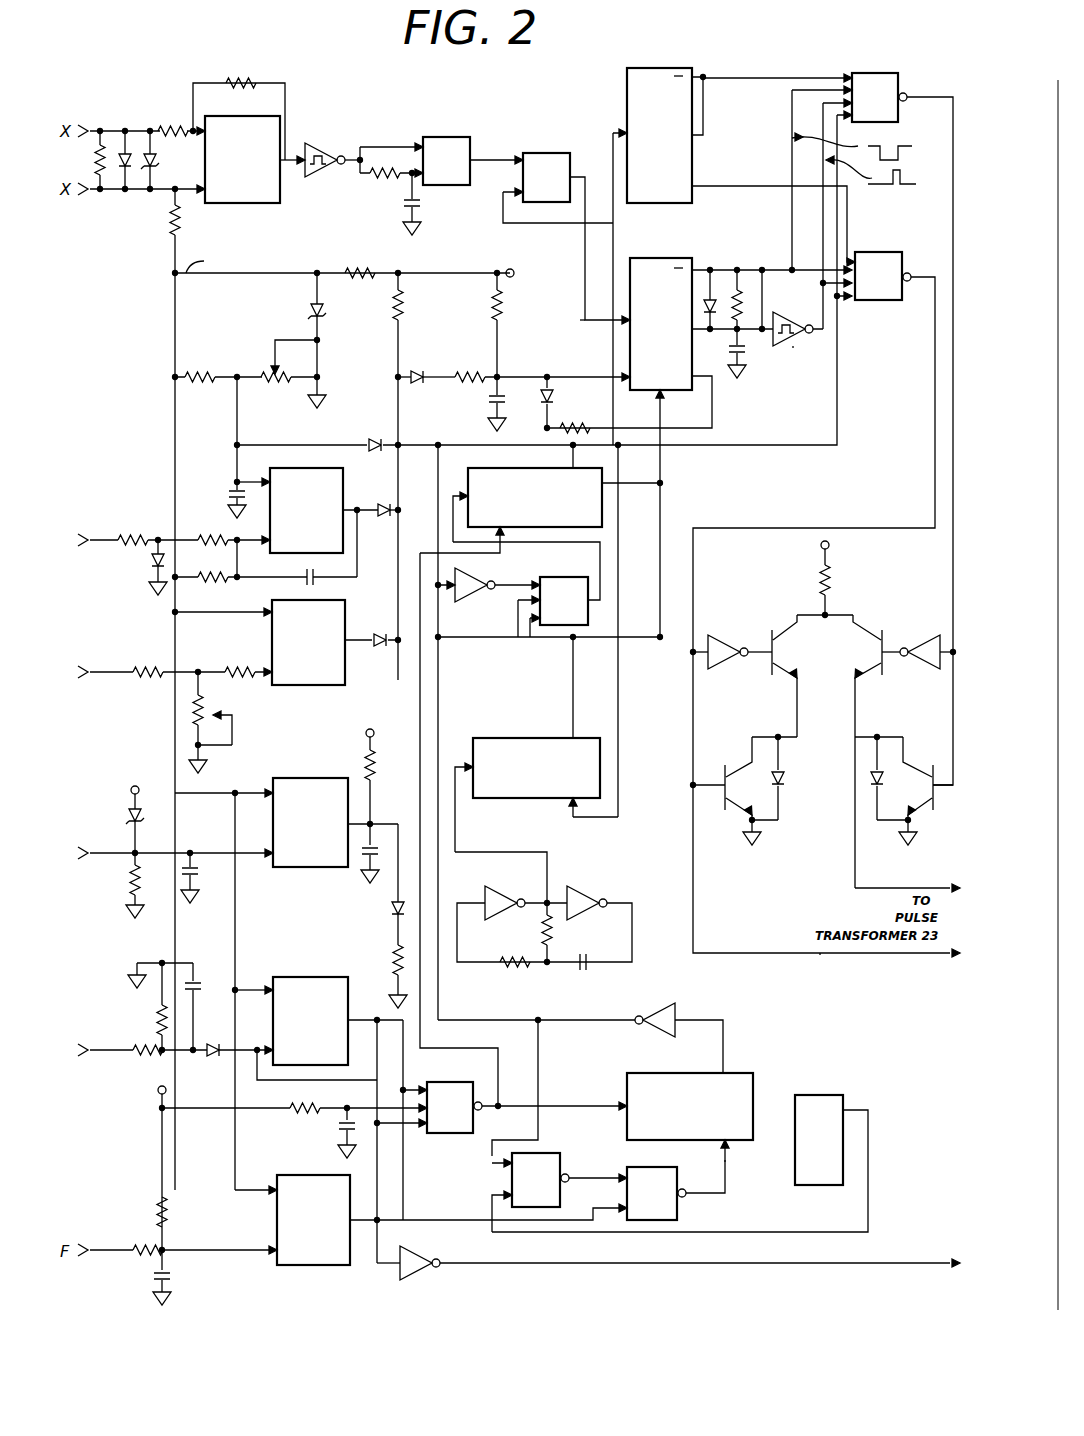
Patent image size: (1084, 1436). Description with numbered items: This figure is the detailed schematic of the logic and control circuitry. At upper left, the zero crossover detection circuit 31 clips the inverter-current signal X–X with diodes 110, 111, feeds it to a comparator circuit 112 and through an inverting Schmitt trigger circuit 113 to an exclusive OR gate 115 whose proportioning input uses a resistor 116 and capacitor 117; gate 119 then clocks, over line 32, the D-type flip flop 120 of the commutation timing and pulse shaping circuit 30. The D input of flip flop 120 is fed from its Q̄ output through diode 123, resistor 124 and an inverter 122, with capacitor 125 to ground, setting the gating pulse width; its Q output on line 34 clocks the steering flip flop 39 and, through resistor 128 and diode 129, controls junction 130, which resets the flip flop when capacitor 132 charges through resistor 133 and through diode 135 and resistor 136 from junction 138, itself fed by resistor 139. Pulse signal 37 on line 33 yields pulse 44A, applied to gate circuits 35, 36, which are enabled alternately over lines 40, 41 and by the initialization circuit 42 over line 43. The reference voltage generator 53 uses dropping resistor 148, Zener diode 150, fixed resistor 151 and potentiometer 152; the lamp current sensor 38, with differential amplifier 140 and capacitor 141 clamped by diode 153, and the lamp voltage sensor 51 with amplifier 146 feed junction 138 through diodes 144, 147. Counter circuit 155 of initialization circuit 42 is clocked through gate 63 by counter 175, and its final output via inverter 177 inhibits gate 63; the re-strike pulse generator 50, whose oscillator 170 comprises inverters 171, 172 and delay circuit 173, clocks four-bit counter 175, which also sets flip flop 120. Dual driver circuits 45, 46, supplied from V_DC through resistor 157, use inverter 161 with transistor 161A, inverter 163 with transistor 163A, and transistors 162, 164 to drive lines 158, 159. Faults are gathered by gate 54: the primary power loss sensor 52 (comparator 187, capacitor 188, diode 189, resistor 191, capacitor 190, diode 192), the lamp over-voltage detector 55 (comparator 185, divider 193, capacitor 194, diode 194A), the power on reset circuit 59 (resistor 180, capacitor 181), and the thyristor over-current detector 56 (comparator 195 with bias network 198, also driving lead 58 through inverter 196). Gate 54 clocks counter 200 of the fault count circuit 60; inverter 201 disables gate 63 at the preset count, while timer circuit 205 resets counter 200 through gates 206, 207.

The diode 110 is at (125, 148).
The diode 111 is at (150, 148).
The comparator circuit 112 is at (285, 195).
The inverting Schmitt trigger circuit 113 is at (325, 143).
The zero crossover detection circuit 31 is at (365, 116).
The exclusive OR logic gate 115 is at (441, 137).
The resistor 116 is at (393, 173).
The capacitor 117 is at (416, 204).
The gate 119 is at (546, 153).
The line 32 is at (585, 320).
The steering flip flop 39 is at (652, 69).
The line 40 is at (738, 78).
The line 41 is at (714, 186).
The gate circuit 35 is at (867, 73).
The pulse signal 37 is at (892, 142).
The pulse 44A is at (902, 177).
The D-type flip flop 120 is at (663, 258).
The diode 123 is at (714, 329).
The resistor 124 is at (744, 290).
The output line 33 is at (734, 266).
The capacitor 125 is at (745, 364).
The inverter 122 is at (789, 340).
The commutation timing and pulse shaping circuit 30 is at (790, 384).
The gate circuit 36 is at (867, 252).
The line 43 is at (716, 445).
The output line 34 is at (712, 400).
The resistor 128 is at (570, 410).
The diode 129 is at (557, 398).
The reference voltage generator 53 is at (230, 320).
The dropping resistor 148 is at (364, 272).
The Zener diode 150 is at (328, 305).
The fixed resistor 151 is at (196, 374).
The potentiometer 152 is at (278, 388).
The resistor 139 is at (400, 306).
The resistor 133 is at (494, 318).
The junction 138 is at (396, 369).
The diode 135 is at (419, 370).
The resistor 136 is at (470, 370).
The junction 130 is at (499, 376).
The capacitor 132 is at (487, 398).
The diode 153 is at (374, 438).
The lamp current sensor circuit 38 is at (227, 474).
The capacitor 141 is at (229, 498).
The linear differential amplifier 140 is at (289, 468).
The diode 144 is at (382, 502).
The lamp voltage sensor circuit 51 is at (230, 676).
The differential amplifier 146 is at (336, 600).
The diode 147 is at (380, 648).
The initialization circuit 42 is at (505, 466).
The counter circuit 155 is at (635, 483).
The inverter 177 is at (474, 602).
The gate 63 is at (563, 628).
The digital counter circuit 175 is at (486, 738).
The re-strike pulse generator 50 is at (594, 864).
The inverter 172 is at (508, 880).
The inverter 171 is at (592, 898).
The feedback or delay circuit 173 is at (545, 975).
The oscillator circuit 170 is at (645, 935).
The resistor 157 is at (831, 582).
The dual driver circuit 46 is at (752, 709).
The inverter 163 is at (728, 634).
The transistor 163A is at (772, 633).
The transistor 162 is at (738, 812).
The dual driver circuit 45 is at (920, 709).
The inverter 161 is at (926, 636).
The transistor 161A is at (876, 634).
The transistor 164 is at (920, 758).
The line 158 is at (903, 888).
The line 159 is at (832, 953).
The primary power loss sensor 52 is at (314, 774).
The comparator circuit 187 is at (313, 867).
The diode 189 is at (142, 820).
The capacitor 188 is at (188, 874).
The resistor 191 is at (373, 768).
The capacitor 190 is at (376, 844).
The diode 192 is at (392, 908).
The lamp over-voltage detector 55 is at (320, 959).
The comparator circuit 185 is at (286, 975).
The diode 194A is at (216, 1044).
The divider 193 is at (130, 1019).
The capacitor 194 is at (198, 982).
The power on reset circuit 59 is at (280, 1137).
The resistor 180 is at (315, 1107).
The capacitor 181 is at (343, 1129).
The bias network 198 is at (130, 1219).
The thyristor over-current detector 56 is at (320, 1297).
The comparator circuit 195 is at (277, 1206).
The inverter 196 is at (432, 1272).
The lead 58 is at (868, 1263).
The gate 54 is at (455, 1135).
The inverter 201 is at (676, 1012).
The counter circuit 200 is at (756, 1071).
The fault count circuit 60 is at (764, 1174).
The gate 206 is at (545, 1155).
The gate 207 is at (646, 1168).
The pulse generator or timer circuit 205 is at (828, 1095).